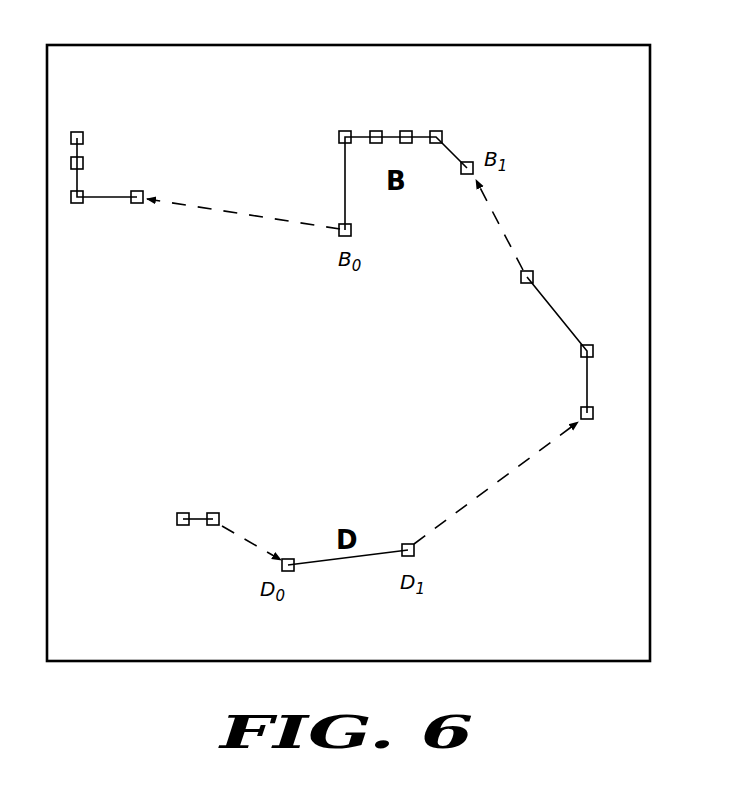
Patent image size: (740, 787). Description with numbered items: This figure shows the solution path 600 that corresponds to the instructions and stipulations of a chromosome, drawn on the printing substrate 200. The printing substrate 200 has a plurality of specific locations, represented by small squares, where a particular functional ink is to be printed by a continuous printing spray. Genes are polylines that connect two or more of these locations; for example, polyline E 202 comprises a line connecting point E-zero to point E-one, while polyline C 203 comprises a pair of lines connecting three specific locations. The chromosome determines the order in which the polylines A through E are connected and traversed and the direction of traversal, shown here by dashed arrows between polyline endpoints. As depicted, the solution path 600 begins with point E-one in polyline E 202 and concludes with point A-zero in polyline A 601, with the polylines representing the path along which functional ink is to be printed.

The printing substrate 200 is at (349, 45).
The solution path 600 is at (545, 565).
The polyline A 601 is at (128, 161).
The polyline C 203 is at (536, 388).
The polyline E 202 is at (201, 463).